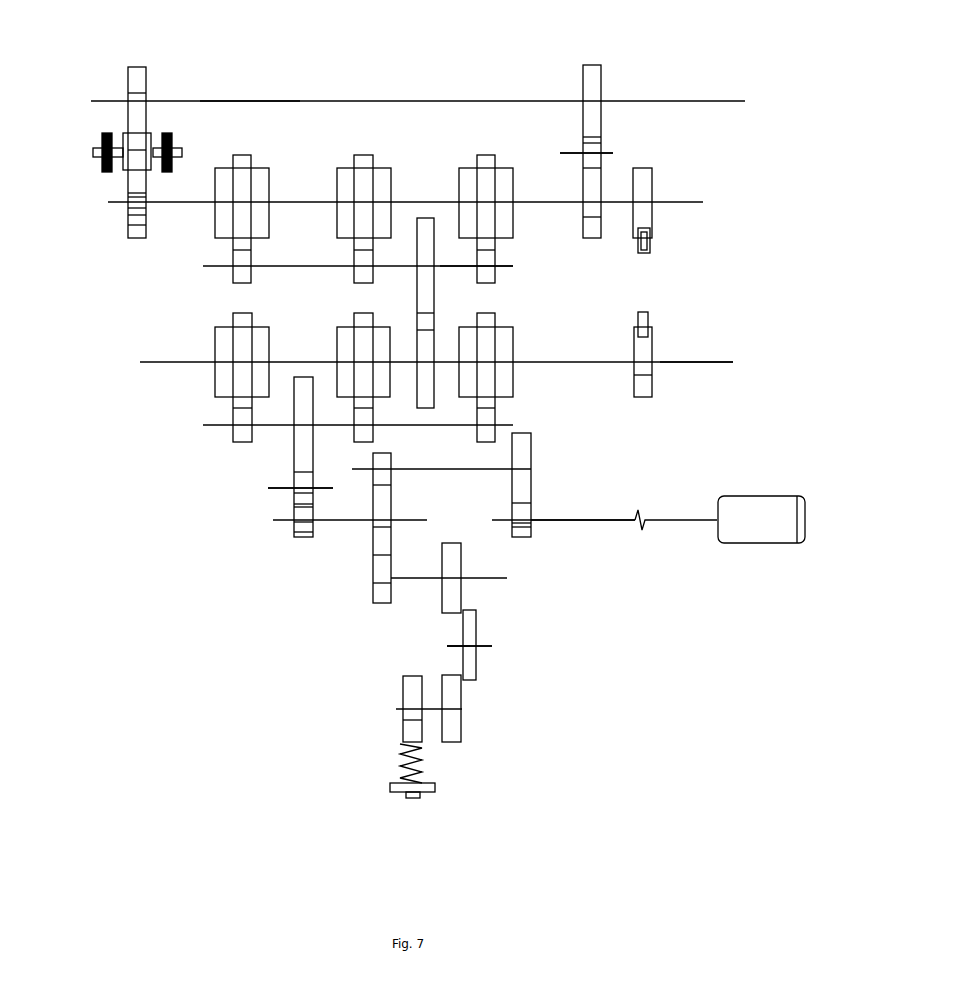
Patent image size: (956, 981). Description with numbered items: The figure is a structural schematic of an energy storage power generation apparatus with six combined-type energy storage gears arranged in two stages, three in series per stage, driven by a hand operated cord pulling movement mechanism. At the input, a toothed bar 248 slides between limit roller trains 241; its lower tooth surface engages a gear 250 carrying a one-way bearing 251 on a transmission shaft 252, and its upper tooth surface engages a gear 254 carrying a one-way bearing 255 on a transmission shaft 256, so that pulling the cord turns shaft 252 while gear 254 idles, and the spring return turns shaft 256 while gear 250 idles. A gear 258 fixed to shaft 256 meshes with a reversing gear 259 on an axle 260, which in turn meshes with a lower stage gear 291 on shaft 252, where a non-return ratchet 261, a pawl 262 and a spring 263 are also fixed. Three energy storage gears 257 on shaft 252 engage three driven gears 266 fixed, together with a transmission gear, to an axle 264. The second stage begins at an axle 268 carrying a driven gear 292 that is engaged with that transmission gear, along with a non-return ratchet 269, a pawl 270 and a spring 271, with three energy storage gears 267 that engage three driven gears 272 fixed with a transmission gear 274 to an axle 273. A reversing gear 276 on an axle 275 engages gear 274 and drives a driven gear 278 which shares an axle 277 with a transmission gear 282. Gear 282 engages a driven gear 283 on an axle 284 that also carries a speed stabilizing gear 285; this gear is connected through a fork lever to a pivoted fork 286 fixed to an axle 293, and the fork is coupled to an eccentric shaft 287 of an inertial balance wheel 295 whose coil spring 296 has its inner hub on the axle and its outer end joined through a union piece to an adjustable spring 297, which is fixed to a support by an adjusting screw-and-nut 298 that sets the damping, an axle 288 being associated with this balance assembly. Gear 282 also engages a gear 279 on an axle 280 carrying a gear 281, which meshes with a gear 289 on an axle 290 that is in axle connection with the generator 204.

The generator 204 is at (775, 527).
The limit roller trains 241 is at (103, 160).
The toothed bar 248 is at (135, 147).
The gear 250 is at (140, 227).
The one-way bearing 251 is at (132, 199).
The transmission shaft 252 is at (147, 208).
The gear 254 is at (147, 85).
The one-way bearing 255 is at (245, 101).
The transmission shaft 256 is at (242, 203).
The energy storage gears 257 is at (485, 192).
The gear 258 is at (588, 78).
The reversing gear 259 is at (587, 143).
The axle 260 is at (613, 150).
The non-return ratchet 261 is at (640, 183).
The pawl 262 is at (645, 228).
The spring 263 is at (645, 246).
The axle 264 is at (508, 266).
The driven gears 266 is at (140, 100).
The energy storage gears 267 is at (248, 362).
The axle 268 is at (725, 361).
The non-return ratchet 269 is at (637, 375).
The pawl 270 is at (652, 330).
The spring 271 is at (648, 314).
The driven gears 272 is at (235, 415).
The axle 273 is at (303, 453).
The transmission gear 274 is at (300, 478).
The axle 275 is at (302, 493).
The reversing gear 276 is at (302, 507).
The axle 277 is at (302, 522).
The driven gear 278 is at (303, 532).
The gear 279 is at (383, 458).
The axle 280 is at (533, 483).
The gear 281 is at (520, 513).
The transmission gear 282 is at (383, 527).
The driven gear 283 is at (383, 583).
The axle 284 is at (450, 580).
The speed stabilizing gear 285 is at (425, 293).
The pivoted fork 286 is at (470, 623).
The eccentric shaft 287 is at (462, 678).
The axle 288 is at (452, 703).
The gear 289 is at (520, 523).
The axle 290 is at (515, 527).
The gear 291 is at (592, 217).
The driven gear 292 is at (423, 328).
The axle 293 is at (447, 646).
The inertial balance wheel 295 is at (452, 712).
The coil spring 296 is at (413, 720).
The adjustable spring 297 is at (420, 767).
The adjusting screw-and-nut 298 is at (433, 788).